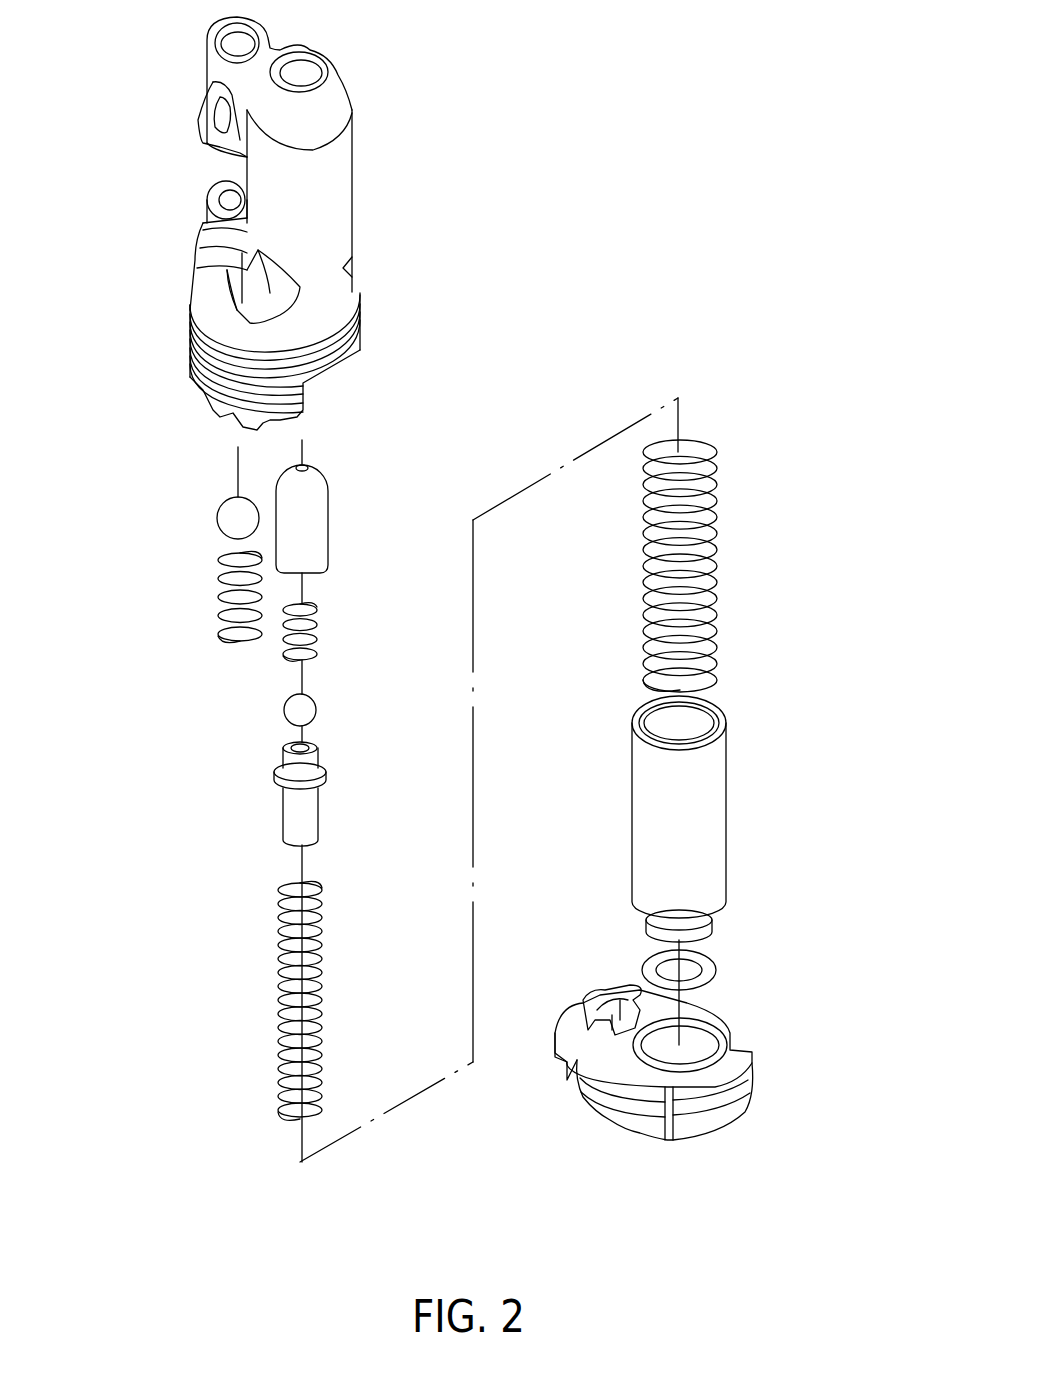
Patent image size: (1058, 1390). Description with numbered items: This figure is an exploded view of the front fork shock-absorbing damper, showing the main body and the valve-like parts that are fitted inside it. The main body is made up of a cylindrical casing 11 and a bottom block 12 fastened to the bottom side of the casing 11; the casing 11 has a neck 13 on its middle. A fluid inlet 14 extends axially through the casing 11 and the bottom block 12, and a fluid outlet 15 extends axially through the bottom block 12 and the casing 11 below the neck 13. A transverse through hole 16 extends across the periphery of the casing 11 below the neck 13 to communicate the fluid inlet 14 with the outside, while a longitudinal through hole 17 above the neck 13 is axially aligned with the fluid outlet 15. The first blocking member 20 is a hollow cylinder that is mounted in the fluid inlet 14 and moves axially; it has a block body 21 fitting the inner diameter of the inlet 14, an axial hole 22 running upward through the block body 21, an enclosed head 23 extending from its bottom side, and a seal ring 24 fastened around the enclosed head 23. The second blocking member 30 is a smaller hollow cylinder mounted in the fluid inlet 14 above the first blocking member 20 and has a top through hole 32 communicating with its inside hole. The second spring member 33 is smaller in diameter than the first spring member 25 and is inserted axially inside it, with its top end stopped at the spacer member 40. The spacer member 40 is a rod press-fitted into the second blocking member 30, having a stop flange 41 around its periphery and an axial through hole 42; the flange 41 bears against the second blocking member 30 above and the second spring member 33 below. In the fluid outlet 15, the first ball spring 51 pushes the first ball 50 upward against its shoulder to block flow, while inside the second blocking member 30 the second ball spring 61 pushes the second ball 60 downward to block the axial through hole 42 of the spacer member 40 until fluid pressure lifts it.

The cylindrical casing 11 is at (347, 203).
The bottom block 12 is at (617, 1115).
The neck 13 is at (230, 165).
The fluid inlet 14 is at (303, 75).
The fluid outlet 15 is at (232, 196).
The transverse through hole 16 is at (270, 292).
The longitudinal through hole 17 is at (240, 43).
The first blocking member 20 is at (775, 838).
The block body 21 is at (712, 802).
The axial hole 22 is at (700, 722).
The enclosed head 23 is at (712, 930).
The seal ring 24 is at (740, 961).
The first spring member 25 is at (718, 543).
The second blocking member 30 is at (328, 525).
The top through hole 32 is at (305, 466).
The second spring member 33 is at (278, 1000).
The spacer member 40 is at (283, 820).
The stop flange 41 is at (280, 787).
The axial through hole 42 is at (295, 748).
The first ball 50 is at (217, 518).
The first ball spring 51 is at (212, 610).
The second ball 60 is at (316, 710).
The second ball spring 61 is at (318, 620).